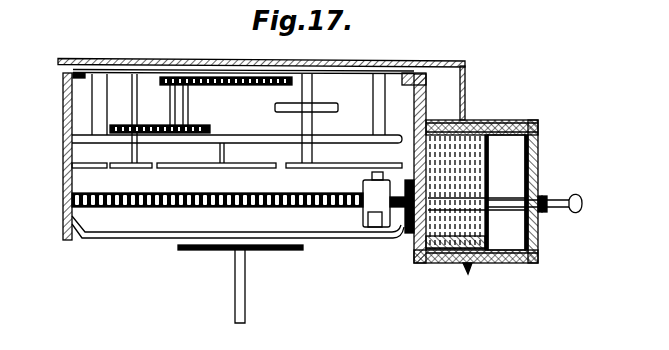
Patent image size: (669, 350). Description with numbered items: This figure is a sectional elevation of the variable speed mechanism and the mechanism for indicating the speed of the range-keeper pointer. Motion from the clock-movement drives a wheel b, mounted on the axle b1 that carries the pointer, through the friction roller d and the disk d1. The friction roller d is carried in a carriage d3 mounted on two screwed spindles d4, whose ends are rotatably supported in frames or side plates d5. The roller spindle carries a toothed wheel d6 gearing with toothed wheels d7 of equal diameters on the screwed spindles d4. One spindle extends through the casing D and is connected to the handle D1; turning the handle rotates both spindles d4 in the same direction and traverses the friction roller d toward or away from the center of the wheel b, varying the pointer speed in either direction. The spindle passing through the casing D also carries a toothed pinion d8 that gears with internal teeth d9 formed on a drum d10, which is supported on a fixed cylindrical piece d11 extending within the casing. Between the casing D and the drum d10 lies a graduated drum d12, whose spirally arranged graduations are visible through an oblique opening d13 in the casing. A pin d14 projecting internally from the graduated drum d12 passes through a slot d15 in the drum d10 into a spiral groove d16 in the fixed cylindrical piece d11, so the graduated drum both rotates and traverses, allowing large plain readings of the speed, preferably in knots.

The frames or side plates d5 is at (430, 93).
The toothed wheel d6 is at (63, 143).
The toothed wheels d7 is at (472, 120).
The internal teeth d9 is at (535, 123).
The drum d10 is at (522, 263).
The fixed cylindrical piece d11 is at (456, 265).
The graduated drum d12 is at (455, 255).
The oblique opening d13 is at (480, 263).
The spiral groove d16 is at (501, 178).
The toothed pinion d8 is at (540, 226).
The slot d15 is at (463, 238).
The casing D is at (538, 162).
The handle D1 is at (580, 206).
The pin d14 is at (417, 252).
The carriage d3 is at (375, 192).
The friction roller d is at (374, 221).
The screwed spindles d4 is at (226, 197).
The disk d1 is at (166, 165).
The wheel b is at (153, 239).
The axle b1 is at (240, 270).